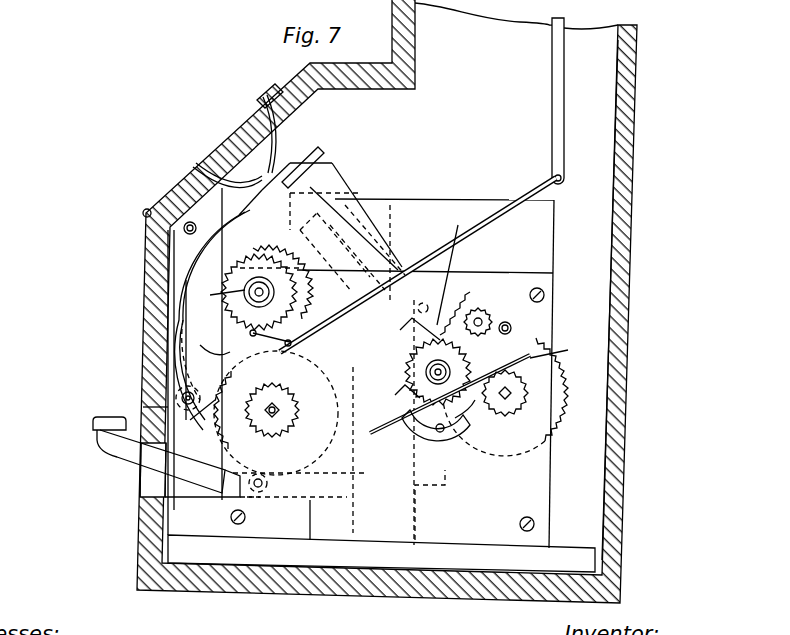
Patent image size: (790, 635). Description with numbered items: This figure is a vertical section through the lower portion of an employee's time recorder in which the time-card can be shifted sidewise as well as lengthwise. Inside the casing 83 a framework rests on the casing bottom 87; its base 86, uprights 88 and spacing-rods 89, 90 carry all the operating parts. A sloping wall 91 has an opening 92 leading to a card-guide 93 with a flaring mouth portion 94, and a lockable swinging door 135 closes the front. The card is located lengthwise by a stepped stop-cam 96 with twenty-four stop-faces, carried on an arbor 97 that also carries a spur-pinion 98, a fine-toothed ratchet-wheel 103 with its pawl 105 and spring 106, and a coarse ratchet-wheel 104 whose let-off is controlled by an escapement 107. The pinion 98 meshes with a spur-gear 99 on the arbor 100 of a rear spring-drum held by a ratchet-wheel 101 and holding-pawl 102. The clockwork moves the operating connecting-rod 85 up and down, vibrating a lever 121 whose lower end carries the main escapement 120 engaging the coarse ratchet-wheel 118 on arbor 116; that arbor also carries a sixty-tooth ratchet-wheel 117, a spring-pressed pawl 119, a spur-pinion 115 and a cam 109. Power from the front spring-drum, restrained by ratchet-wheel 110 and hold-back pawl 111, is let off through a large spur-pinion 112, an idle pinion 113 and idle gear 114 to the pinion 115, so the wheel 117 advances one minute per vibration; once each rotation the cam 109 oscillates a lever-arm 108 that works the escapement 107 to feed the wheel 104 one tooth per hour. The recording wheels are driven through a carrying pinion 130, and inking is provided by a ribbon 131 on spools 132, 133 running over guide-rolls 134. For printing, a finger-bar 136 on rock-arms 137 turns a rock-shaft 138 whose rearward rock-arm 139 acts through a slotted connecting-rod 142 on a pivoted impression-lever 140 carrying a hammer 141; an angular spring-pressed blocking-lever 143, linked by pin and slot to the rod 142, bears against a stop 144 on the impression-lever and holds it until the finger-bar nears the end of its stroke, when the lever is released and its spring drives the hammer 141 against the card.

The casing 83 is at (622, 283).
The operating connecting-rod 85 is at (564, 68).
The base of framework 86 is at (381, 553).
The bottom of casing 87 is at (458, 595).
The uprights 88 is at (361, 368).
The spacing-rod 89 is at (544, 292).
The spacing-rod 90 is at (238, 525).
The sloping wall 91 is at (268, 92).
The opening 92 is at (200, 172).
The card-guide 93 is at (303, 170).
The flaring or mouth portion 94 is at (273, 142).
The stop-cam 96 is at (431, 505).
The spindle or arbor 97 is at (427, 400).
The spur-pinion 98 is at (433, 434).
The spur-gear 99 is at (566, 389).
The arbor of spring-drum 100 is at (566, 347).
The ratchet-wheel 101 is at (512, 393).
The holding-pawl 102 is at (512, 330).
The fine-toothed ratchet-wheel 103 is at (450, 310).
The coarse ratchet-wheel 104 is at (452, 261).
The pawl 105 is at (397, 360).
The spring 106 is at (393, 350).
The escapement 107 is at (456, 430).
The lever-arm 108 is at (393, 400).
The cam 109 is at (211, 295).
The ratchet-wheel 110 is at (272, 437).
The hold-back pawl 111 is at (237, 410).
The large spur-pinion 112 is at (193, 422).
The idle pinion 113 is at (222, 347).
The idle gear 114 is at (179, 315).
The spur-pinion 115 is at (252, 300).
The arbor 116 is at (245, 258).
The fine-toothed ratchet-wheel 117 is at (240, 268).
The coarse ratchet-wheel 118 is at (283, 273).
The spring-pressed pawl 119 is at (239, 215).
The escapement 120 is at (262, 341).
The lever 121 is at (500, 213).
The carrying pinion 130 is at (276, 413).
The inking-ribbon 131 is at (178, 327).
The spool 132 is at (176, 398).
The spool 133 is at (355, 498).
The guide-rolls 134 is at (330, 197).
The swinging door 135 is at (150, 262).
The finger-bar 136 is at (93, 428).
The rock-arms 137 is at (201, 470).
The rock-shaft 138 is at (258, 490).
The rock-arm 139 is at (308, 532).
The impression-lever 140 is at (392, 208).
The hammer 141 is at (362, 196).
The connecting-rod 142 is at (393, 505).
The blocking-lever 143 is at (540, 318).
The stop 144 is at (545, 445).